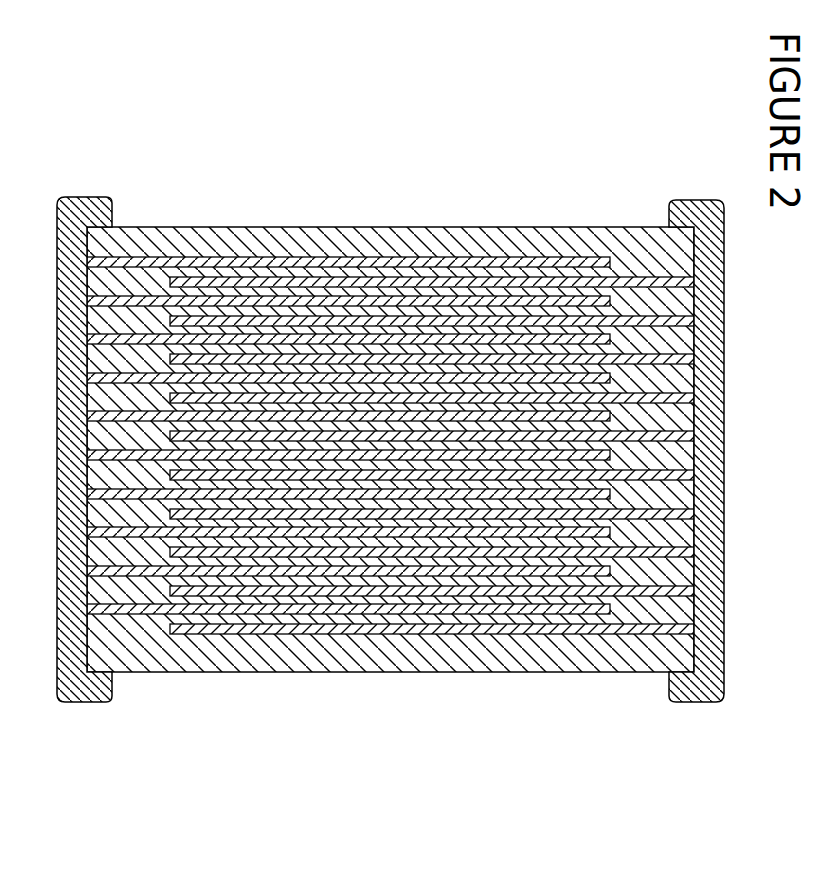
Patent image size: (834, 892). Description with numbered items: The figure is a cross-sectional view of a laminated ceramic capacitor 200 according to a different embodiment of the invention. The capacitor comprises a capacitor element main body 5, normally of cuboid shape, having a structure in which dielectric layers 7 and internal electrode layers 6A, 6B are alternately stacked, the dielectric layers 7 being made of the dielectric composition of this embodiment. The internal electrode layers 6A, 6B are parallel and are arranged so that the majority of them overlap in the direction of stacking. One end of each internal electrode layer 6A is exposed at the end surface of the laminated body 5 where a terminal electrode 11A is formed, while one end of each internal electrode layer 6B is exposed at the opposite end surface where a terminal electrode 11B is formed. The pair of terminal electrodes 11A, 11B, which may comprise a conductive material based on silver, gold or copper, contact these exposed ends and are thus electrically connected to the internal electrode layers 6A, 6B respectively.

The laminated ceramic capacitor 200 is at (388, 481).
The capacitor element main body 5 is at (390, 473).
The dielectric layers 7 is at (287, 247).
The internal electrode layers 6A is at (447, 240).
The internal electrode layers 6B is at (403, 650).
The terminal electrode 11A is at (73, 703).
The terminal electrode 11B is at (695, 200).